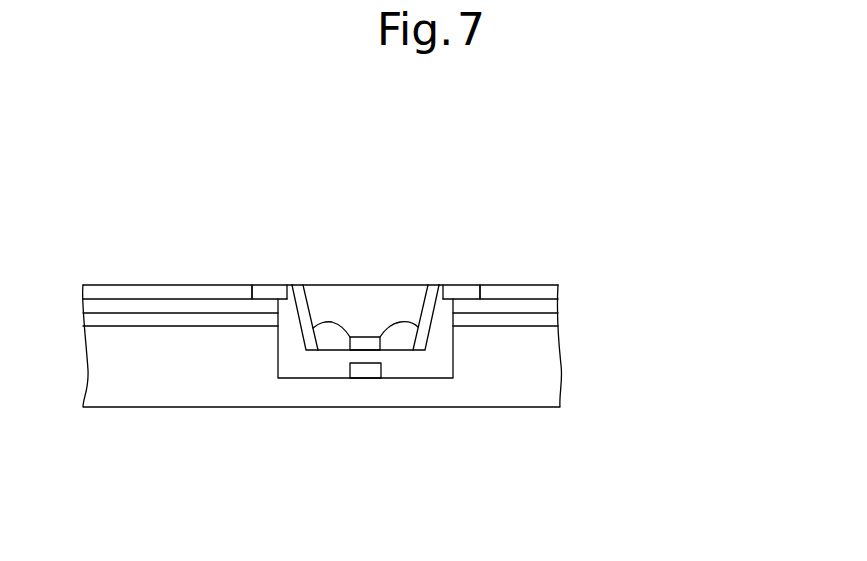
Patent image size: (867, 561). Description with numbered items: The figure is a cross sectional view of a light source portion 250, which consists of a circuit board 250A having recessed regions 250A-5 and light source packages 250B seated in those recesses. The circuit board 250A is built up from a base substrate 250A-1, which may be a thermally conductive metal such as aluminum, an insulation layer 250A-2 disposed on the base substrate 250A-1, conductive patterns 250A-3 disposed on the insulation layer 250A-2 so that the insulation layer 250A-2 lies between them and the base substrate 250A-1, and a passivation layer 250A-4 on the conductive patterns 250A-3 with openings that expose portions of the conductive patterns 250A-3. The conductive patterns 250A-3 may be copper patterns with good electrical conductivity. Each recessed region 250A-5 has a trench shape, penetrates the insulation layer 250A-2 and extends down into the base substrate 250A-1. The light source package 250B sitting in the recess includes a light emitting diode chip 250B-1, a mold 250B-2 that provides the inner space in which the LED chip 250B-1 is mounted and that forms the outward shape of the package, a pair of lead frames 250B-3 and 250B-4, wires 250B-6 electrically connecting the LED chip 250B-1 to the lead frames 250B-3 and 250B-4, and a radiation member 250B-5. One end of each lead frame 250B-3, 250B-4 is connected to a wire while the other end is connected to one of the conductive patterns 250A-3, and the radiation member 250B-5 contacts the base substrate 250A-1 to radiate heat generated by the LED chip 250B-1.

The light source portion 250 is at (598, 157).
The circuit board 250A is at (672, 267).
The base substrate 250A-1 is at (552, 378).
The insulation layer 250A-2 is at (543, 320).
The conductive patterns 250A-3 is at (541, 305).
The passivation layer 250A-4 is at (543, 292).
The recessed region 250A-5 is at (449, 365).
The light source package 250B is at (510, 197).
The light emitting diode chip 250B-1 is at (360, 342).
The mold 250B-2 is at (287, 293).
The lead frame 250B-3 is at (263, 292).
The lead frame 250B-4 is at (457, 291).
The radiation member 250B-5 is at (365, 368).
The wires 250B-6 is at (397, 322).